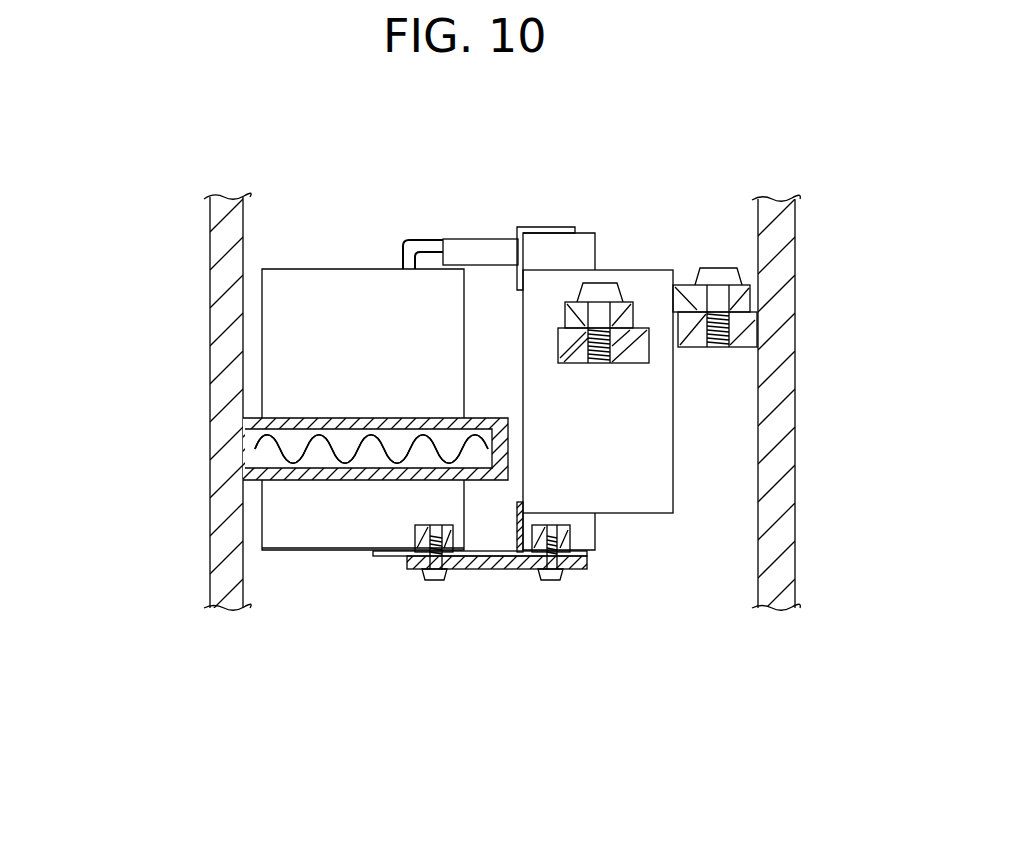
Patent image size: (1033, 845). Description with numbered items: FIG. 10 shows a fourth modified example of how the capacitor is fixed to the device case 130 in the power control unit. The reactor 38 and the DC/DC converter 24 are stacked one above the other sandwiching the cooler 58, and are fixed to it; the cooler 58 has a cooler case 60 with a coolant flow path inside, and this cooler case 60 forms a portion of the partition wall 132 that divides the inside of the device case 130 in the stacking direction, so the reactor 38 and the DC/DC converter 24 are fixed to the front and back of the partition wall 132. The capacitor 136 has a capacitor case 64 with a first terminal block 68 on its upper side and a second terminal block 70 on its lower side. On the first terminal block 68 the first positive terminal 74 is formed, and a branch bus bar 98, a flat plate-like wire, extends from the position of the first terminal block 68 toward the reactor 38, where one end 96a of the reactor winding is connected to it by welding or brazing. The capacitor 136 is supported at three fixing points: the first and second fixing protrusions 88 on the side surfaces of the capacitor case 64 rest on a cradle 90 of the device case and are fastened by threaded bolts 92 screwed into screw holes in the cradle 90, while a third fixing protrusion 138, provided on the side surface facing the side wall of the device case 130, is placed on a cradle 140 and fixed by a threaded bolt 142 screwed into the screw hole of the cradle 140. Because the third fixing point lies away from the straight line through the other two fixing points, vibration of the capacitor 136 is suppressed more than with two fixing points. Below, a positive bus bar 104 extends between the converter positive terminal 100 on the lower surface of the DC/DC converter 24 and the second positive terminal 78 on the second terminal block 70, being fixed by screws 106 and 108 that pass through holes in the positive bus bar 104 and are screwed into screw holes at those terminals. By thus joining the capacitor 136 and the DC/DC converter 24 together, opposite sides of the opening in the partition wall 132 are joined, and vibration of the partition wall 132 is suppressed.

The device case 130 is at (223, 243).
The reactor 38 is at (318, 284).
The DC/DC converter 24 is at (320, 537).
The cooler 58 is at (287, 417).
The cooler case 60 is at (330, 417).
The partition wall 132 is at (371, 449).
The one end of the winding 96a is at (423, 237).
The branch bus bar 98 is at (478, 250).
The first positive terminal 74 is at (550, 228).
The first terminal block 68 is at (582, 252).
The capacitor case 64 is at (613, 464).
The threaded bolt 92 is at (602, 293).
The fixing protrusion 88 is at (632, 300).
The cradle 90 is at (650, 318).
The capacitor 136 is at (675, 287).
The cradle 140 is at (738, 348).
The third fixing protrusion 138 is at (718, 270).
The threaded bolt 142 is at (727, 235).
The second terminal block 70 is at (587, 538).
The second positive terminal 78 is at (580, 568).
The converter positive terminal 100 is at (388, 557).
The positive bus bar 104 is at (485, 572).
The screw 106 is at (435, 582).
The screw 108 is at (548, 582).